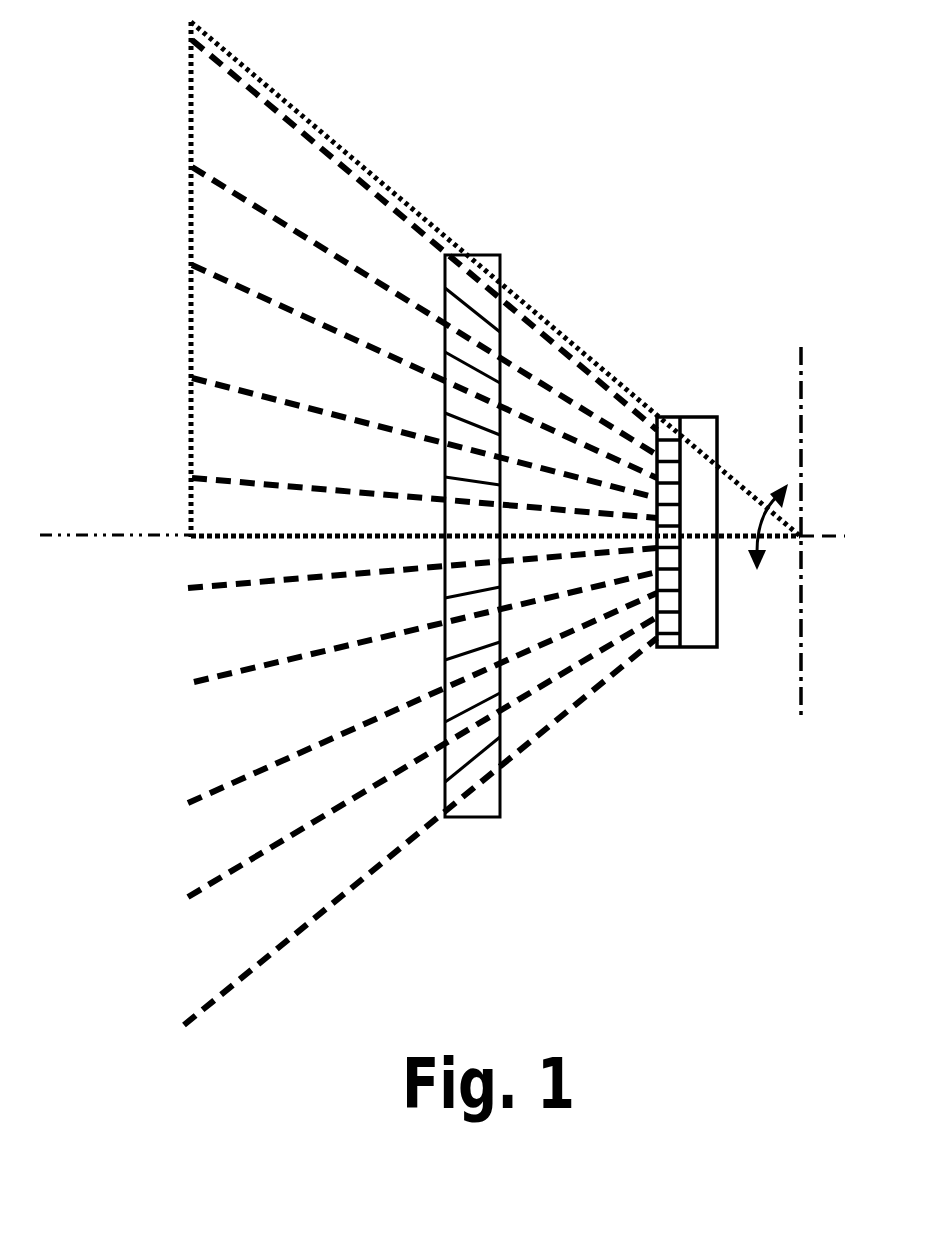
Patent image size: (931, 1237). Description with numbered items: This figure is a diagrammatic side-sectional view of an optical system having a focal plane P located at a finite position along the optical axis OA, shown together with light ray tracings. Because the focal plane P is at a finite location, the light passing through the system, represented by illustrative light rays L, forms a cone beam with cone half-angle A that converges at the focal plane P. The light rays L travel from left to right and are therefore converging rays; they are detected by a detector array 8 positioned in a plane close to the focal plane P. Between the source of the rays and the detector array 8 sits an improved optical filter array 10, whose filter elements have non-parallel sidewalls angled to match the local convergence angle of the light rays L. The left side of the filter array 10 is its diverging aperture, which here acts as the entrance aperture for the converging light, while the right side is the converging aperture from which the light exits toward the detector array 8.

The optical filter array 10 is at (479, 200).
The detector array 8 is at (694, 380).
The light rays L is at (221, 677).
The optical axis OA is at (442, 518).
The focal plane P is at (804, 503).
The cone half-angle A is at (759, 527).